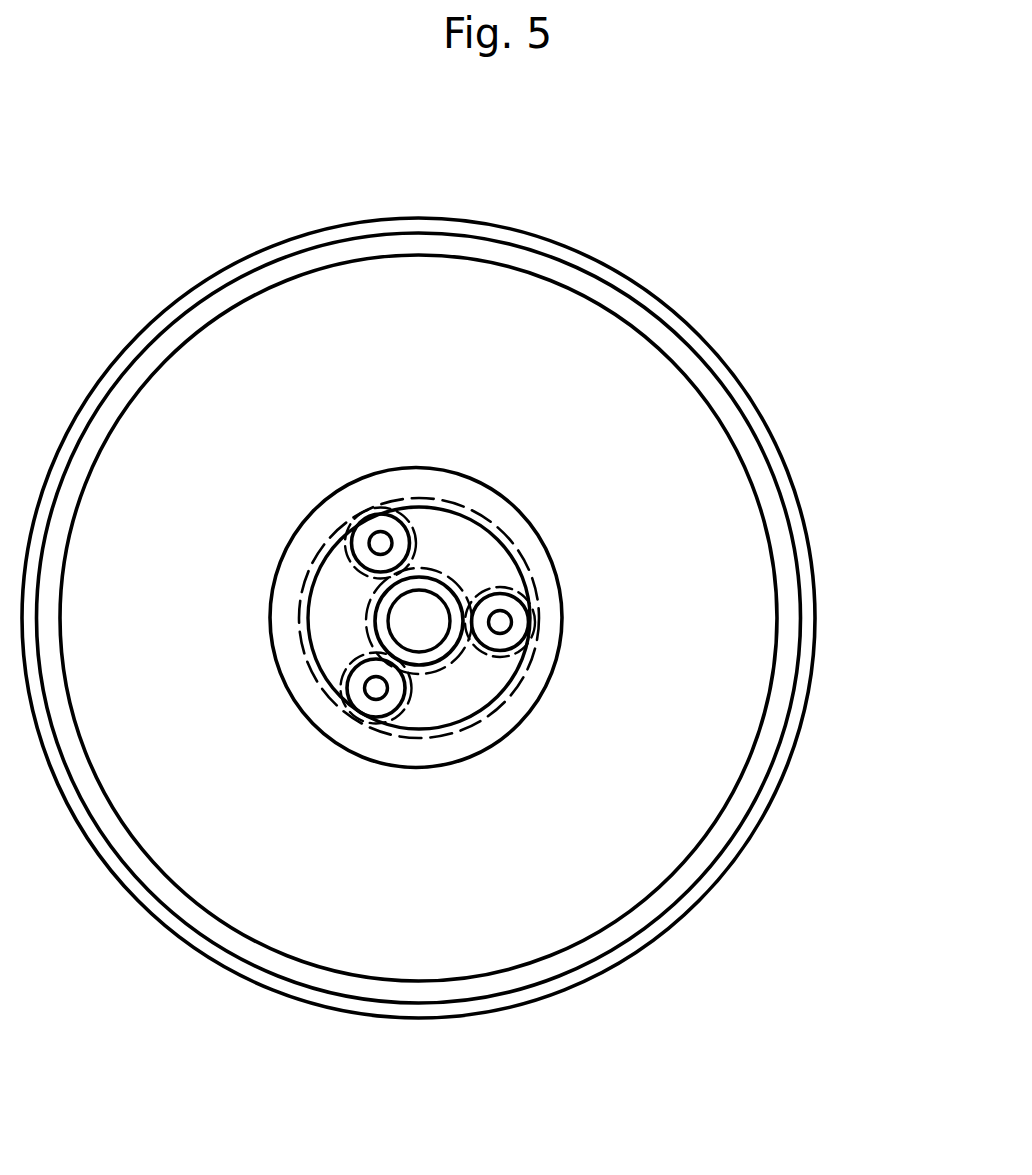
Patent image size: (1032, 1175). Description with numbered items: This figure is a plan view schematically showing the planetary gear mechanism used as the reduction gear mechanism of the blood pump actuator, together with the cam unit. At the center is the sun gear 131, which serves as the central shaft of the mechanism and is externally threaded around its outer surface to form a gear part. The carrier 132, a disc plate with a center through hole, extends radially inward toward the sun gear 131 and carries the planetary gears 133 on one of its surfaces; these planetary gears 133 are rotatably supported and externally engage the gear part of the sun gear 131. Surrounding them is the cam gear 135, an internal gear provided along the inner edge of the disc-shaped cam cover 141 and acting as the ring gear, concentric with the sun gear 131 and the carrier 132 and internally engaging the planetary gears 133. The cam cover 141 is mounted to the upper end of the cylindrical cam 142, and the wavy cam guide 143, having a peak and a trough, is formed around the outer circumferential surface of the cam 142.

The sun gear 131 is at (452, 590).
The carrier 132 is at (442, 547).
The planetary gears 133 is at (388, 531).
The cam gear 135 is at (342, 513).
The cam cover 141 is at (693, 453).
The cam 142 is at (766, 498).
The cam guide 143 is at (803, 570).